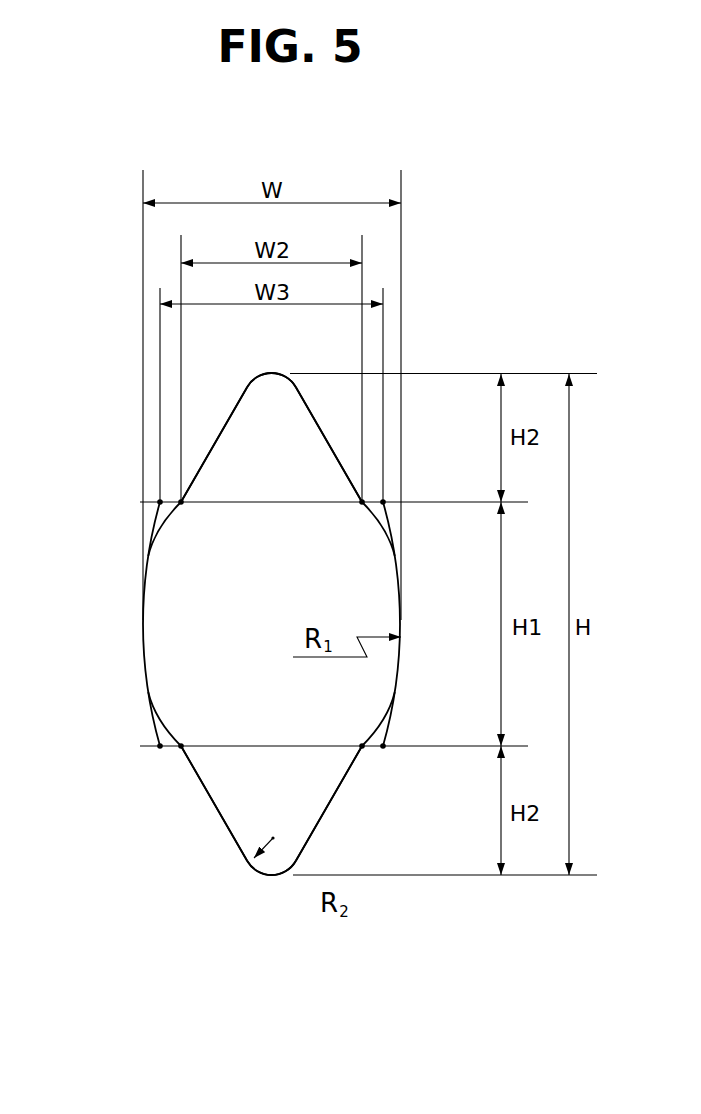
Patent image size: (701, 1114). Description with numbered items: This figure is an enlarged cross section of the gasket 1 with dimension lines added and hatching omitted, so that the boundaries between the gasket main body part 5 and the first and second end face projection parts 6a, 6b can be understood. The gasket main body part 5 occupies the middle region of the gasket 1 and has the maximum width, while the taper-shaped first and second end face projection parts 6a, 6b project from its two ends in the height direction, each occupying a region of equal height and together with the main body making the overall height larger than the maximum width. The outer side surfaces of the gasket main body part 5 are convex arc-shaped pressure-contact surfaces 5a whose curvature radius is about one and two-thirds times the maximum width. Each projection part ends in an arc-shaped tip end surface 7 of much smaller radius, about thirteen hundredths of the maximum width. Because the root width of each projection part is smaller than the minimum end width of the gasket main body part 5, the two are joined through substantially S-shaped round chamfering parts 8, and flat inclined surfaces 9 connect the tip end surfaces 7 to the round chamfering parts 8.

The gasket 1 is at (168, 480).
The gasket main body part 5 is at (177, 668).
The pressure-contact surface 5a is at (142, 623).
The first end face projection part 6a is at (243, 413).
The second end face projection part 6b is at (235, 790).
The tip end surface 7 is at (268, 372).
The round chamfering part 8 is at (167, 513).
The inclined surface 9 is at (213, 445).